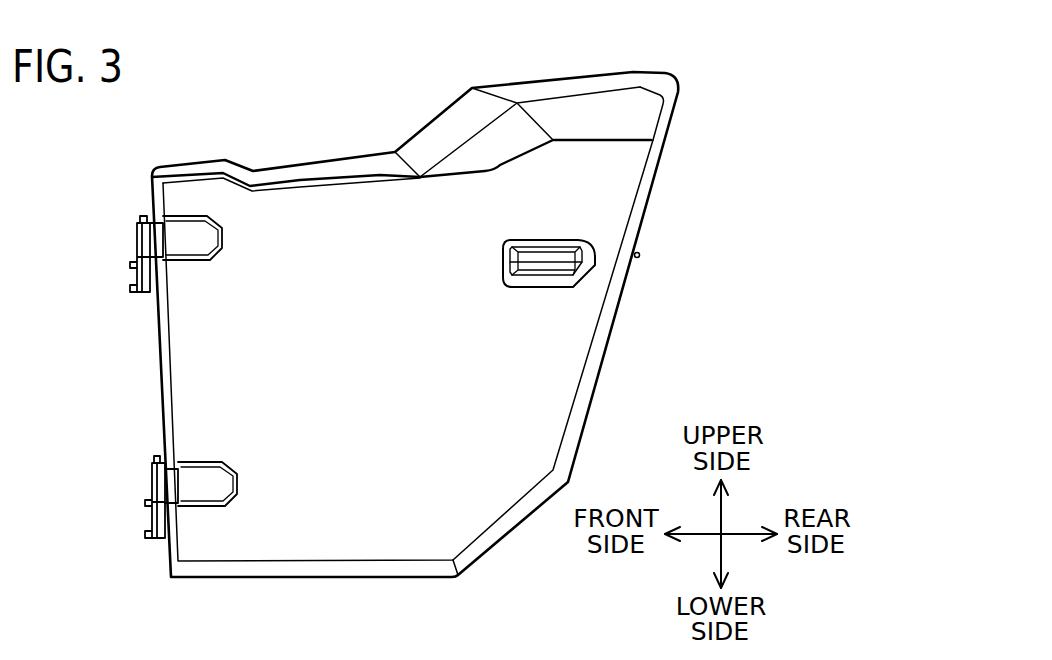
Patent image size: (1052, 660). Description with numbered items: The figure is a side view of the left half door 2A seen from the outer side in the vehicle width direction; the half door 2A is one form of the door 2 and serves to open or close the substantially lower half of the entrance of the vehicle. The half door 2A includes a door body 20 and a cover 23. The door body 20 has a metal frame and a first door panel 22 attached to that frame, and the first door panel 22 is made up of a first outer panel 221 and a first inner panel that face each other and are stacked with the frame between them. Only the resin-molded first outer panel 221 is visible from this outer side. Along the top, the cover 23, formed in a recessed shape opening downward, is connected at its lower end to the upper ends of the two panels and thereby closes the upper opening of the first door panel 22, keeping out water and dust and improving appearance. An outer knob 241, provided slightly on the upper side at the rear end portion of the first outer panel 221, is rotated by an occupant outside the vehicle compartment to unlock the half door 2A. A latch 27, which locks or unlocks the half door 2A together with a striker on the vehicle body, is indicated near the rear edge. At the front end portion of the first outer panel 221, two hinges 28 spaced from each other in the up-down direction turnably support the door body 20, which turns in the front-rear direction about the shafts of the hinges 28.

The door 2 is at (424, 296).
The half door 2A is at (277, 82).
The door body 20 is at (158, 356).
The first door panel 22 is at (481, 357).
The first outer panel 221 is at (570, 343).
The cover 23 is at (648, 112).
The outer knob 241 is at (577, 265).
The latch 27 is at (639, 254).
The hinges 28 is at (137, 237).